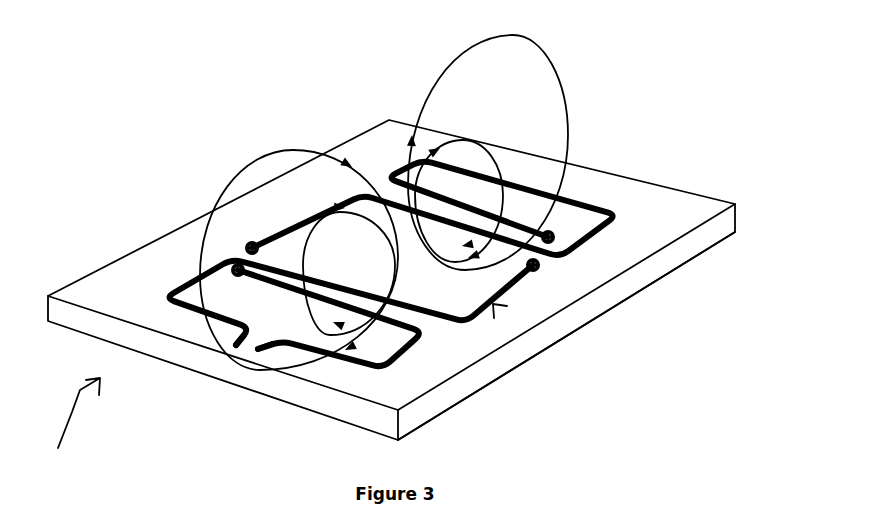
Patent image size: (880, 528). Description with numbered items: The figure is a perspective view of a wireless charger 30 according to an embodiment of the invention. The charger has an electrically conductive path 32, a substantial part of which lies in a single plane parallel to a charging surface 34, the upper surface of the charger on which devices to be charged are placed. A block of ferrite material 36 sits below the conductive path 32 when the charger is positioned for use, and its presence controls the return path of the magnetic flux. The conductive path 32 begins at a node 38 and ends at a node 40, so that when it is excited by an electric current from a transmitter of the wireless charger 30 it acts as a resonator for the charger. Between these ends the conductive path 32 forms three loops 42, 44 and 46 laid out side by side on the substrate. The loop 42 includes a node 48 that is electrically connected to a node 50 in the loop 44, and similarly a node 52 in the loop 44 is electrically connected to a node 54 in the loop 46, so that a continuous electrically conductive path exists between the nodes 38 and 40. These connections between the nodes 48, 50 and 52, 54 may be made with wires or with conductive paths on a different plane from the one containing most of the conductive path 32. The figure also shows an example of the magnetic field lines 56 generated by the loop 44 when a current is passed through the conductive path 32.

The wireless charger 30 is at (66, 433).
The electrically conductive path 32 is at (496, 306).
The charging surface 34 is at (665, 212).
The block of ferrite material 36 is at (417, 416).
The node 38 is at (236, 347).
The node 40 is at (258, 351).
The loop 42 is at (367, 351).
The loop 44 is at (466, 325).
The loop 46 is at (570, 220).
The node 48 is at (232, 270).
The node 50 is at (252, 244).
The node 52 is at (540, 266).
The node 54 is at (556, 238).
The magnetic field lines 56 is at (262, 163).